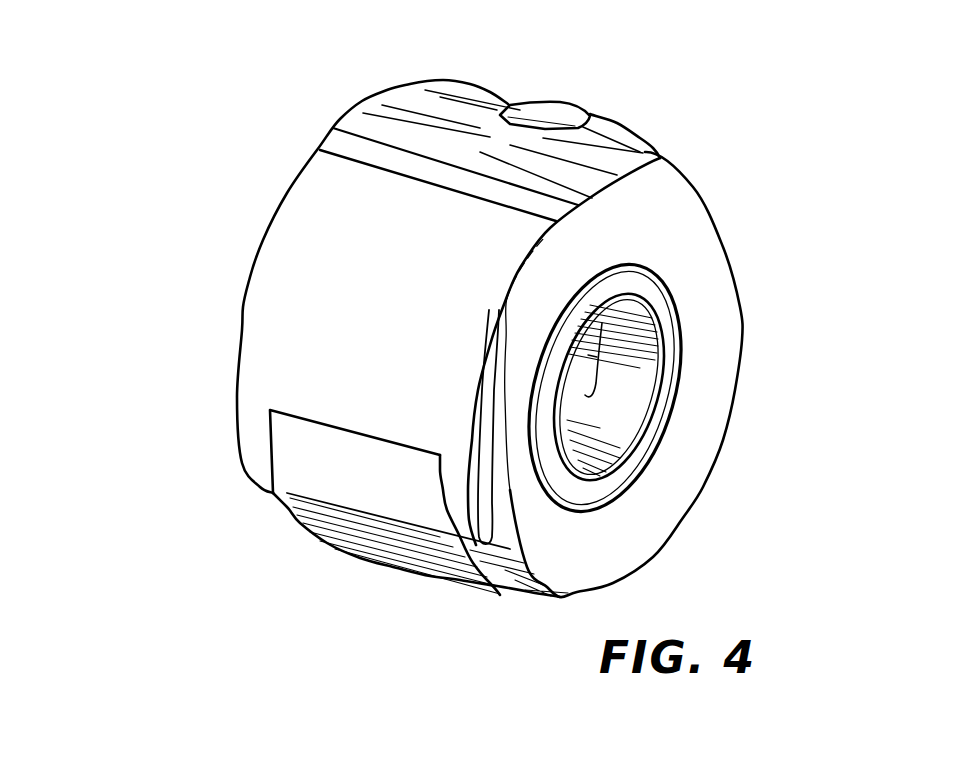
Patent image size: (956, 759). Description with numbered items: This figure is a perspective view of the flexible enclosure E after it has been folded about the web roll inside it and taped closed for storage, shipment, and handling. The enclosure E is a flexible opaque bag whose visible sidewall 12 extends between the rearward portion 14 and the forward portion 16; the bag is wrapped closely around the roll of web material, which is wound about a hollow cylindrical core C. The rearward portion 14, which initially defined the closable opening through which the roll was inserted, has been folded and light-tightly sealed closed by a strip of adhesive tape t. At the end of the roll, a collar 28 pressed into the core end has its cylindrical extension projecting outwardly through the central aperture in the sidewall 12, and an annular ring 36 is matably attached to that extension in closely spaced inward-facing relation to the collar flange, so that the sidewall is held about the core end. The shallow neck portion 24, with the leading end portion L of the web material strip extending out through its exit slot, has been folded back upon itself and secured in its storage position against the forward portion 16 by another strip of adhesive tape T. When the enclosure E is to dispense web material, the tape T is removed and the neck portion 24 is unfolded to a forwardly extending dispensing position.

The sidewall 12 is at (688, 258).
The rearward portion 14 is at (700, 190).
The forward portion 16 is at (500, 592).
The neck portion 24 is at (358, 370).
The collar 28 is at (657, 357).
The annular ring 36 is at (657, 292).
The core C is at (590, 392).
The flexible enclosure E is at (686, 528).
The leading end portion L is at (482, 396).
The adhesive tape T is at (350, 527).
The adhesive tape t is at (567, 113).